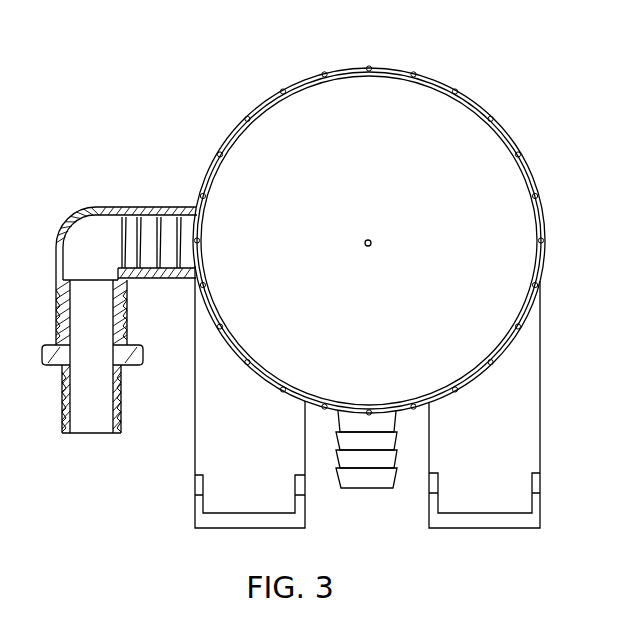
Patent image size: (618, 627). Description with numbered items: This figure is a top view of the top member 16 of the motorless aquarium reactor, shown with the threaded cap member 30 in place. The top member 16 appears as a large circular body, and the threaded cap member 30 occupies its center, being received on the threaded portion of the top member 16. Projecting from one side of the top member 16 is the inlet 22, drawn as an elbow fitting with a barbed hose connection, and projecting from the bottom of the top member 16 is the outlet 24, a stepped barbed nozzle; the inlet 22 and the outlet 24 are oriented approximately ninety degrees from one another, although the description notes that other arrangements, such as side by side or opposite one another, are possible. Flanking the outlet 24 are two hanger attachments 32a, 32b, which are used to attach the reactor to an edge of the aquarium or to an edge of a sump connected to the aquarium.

The top member 16 is at (293, 139).
The inlet 22 is at (148, 207).
The outlet 24 is at (376, 488).
The threaded cap member 30 is at (356, 305).
The hanger attachment 32a is at (235, 451).
The hanger attachment 32b is at (470, 451).